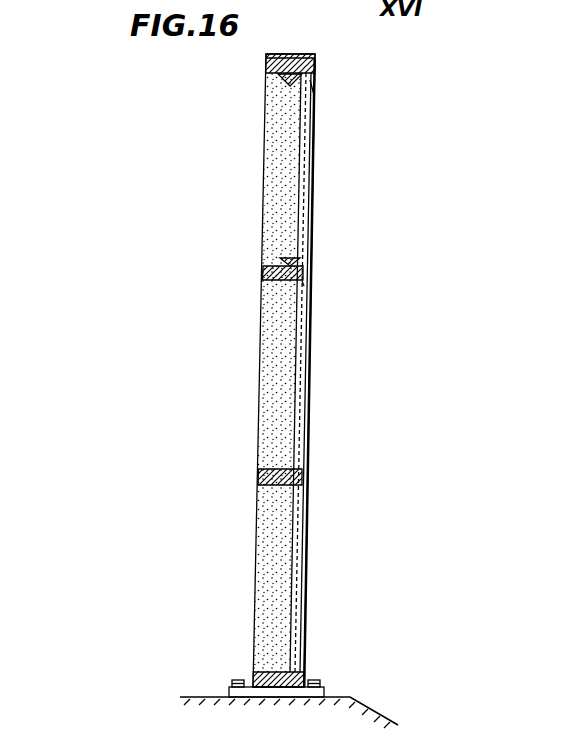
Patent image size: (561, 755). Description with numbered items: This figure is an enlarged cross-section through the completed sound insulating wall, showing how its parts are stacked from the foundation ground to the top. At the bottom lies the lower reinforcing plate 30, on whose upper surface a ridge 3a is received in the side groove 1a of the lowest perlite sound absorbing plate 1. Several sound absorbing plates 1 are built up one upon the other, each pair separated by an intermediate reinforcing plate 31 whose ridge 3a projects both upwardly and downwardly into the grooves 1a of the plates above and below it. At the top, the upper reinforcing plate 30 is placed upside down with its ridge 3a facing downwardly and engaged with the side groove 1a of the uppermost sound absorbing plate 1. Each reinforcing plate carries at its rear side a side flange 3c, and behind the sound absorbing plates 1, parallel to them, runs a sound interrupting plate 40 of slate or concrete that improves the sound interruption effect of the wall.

The perlite sound absorbing plate 1 is at (266, 150).
The groove 1a is at (276, 80).
The ridge 3a is at (312, 95).
The side flange 3c is at (312, 283).
The reinforcing plate 30 is at (304, 73).
The intermediate reinforcing plate 31 is at (268, 278).
The sound interrupting plate 40 is at (312, 176).